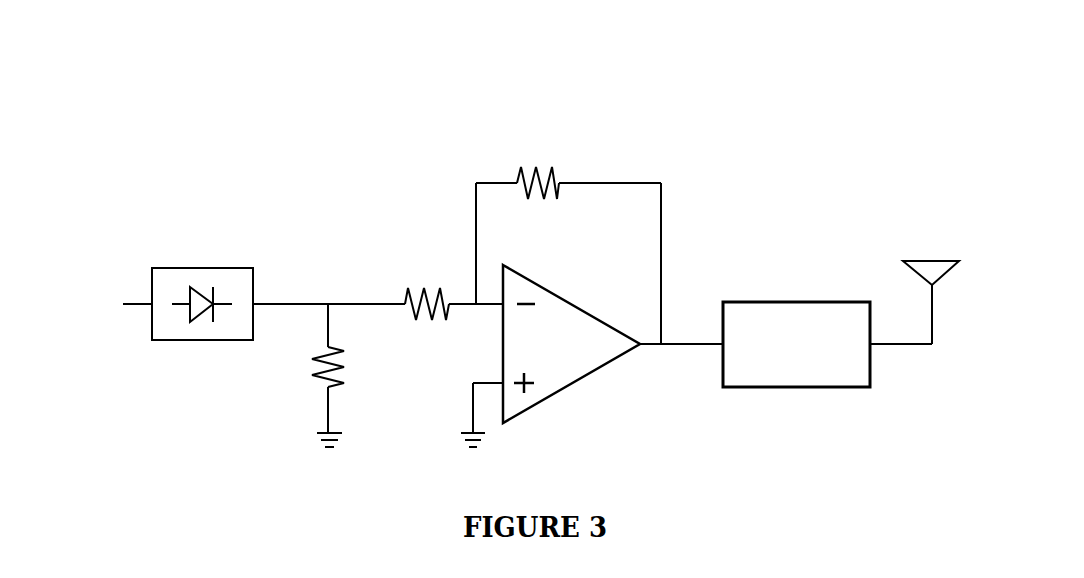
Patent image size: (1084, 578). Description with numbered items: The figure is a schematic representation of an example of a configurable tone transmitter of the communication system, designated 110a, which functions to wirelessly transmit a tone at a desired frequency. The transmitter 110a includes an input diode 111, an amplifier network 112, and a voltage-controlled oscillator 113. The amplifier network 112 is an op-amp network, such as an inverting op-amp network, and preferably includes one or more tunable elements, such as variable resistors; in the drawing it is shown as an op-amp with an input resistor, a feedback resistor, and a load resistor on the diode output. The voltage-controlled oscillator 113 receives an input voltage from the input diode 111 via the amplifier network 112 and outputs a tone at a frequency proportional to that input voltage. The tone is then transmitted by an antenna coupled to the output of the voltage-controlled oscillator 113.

The sensor circuit 110a is at (269, 62).
The input diode 111 is at (143, 235).
The amplifier network 112 is at (670, 108).
The voltage-controlled oscillator 113 is at (820, 373).